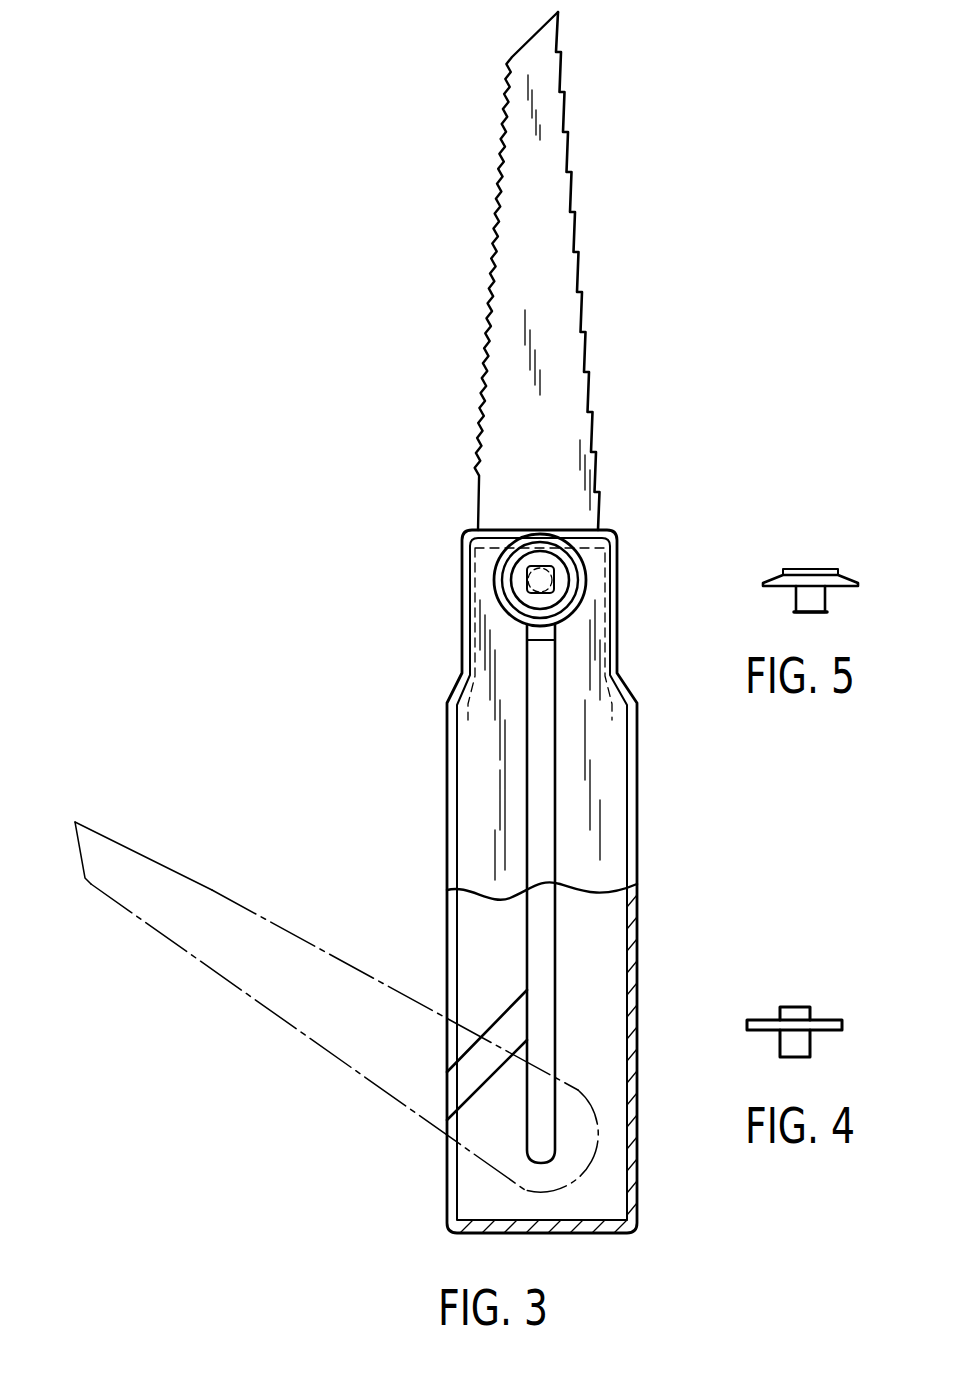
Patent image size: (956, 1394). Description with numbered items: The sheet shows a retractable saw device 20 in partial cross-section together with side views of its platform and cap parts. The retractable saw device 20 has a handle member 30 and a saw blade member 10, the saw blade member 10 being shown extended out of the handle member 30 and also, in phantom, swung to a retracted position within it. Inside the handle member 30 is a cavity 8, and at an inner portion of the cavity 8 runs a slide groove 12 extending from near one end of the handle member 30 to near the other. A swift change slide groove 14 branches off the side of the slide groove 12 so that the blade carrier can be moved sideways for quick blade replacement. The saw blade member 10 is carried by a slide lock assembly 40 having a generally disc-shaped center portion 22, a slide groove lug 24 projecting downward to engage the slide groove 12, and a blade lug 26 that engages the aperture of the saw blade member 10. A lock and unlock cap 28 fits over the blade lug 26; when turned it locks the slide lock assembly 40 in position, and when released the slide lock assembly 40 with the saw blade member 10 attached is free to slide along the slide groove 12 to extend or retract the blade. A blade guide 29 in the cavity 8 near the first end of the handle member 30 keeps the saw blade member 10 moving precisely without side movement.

In FIG. 3, the cavity 8 is at (600, 724).
In FIG. 3, the saw blade member 10 is at (440, 253).
In FIG. 3, the slide groove 12 is at (545, 828).
In FIG. 3, the swift change slide groove 14 is at (492, 1082).
In FIG. 3, the retractable saw device 20 is at (650, 388).
In FIG. 4, the center portion 22 is at (765, 1022).
In FIG. 4, the slide groove lug 24 is at (800, 1058).
In FIG. 4, the blade lug 26 is at (810, 1010).
In FIG. 3, the lock and unlock cap 28 is at (540, 628).
In FIG. 5, the lock and unlock cap 28 is at (800, 598).
In FIG. 3, the blade guide 29 is at (477, 581).
In FIG. 3, the handle member 30 is at (681, 512).
In FIG. 4, the slide lock assembly 40 is at (818, 972).